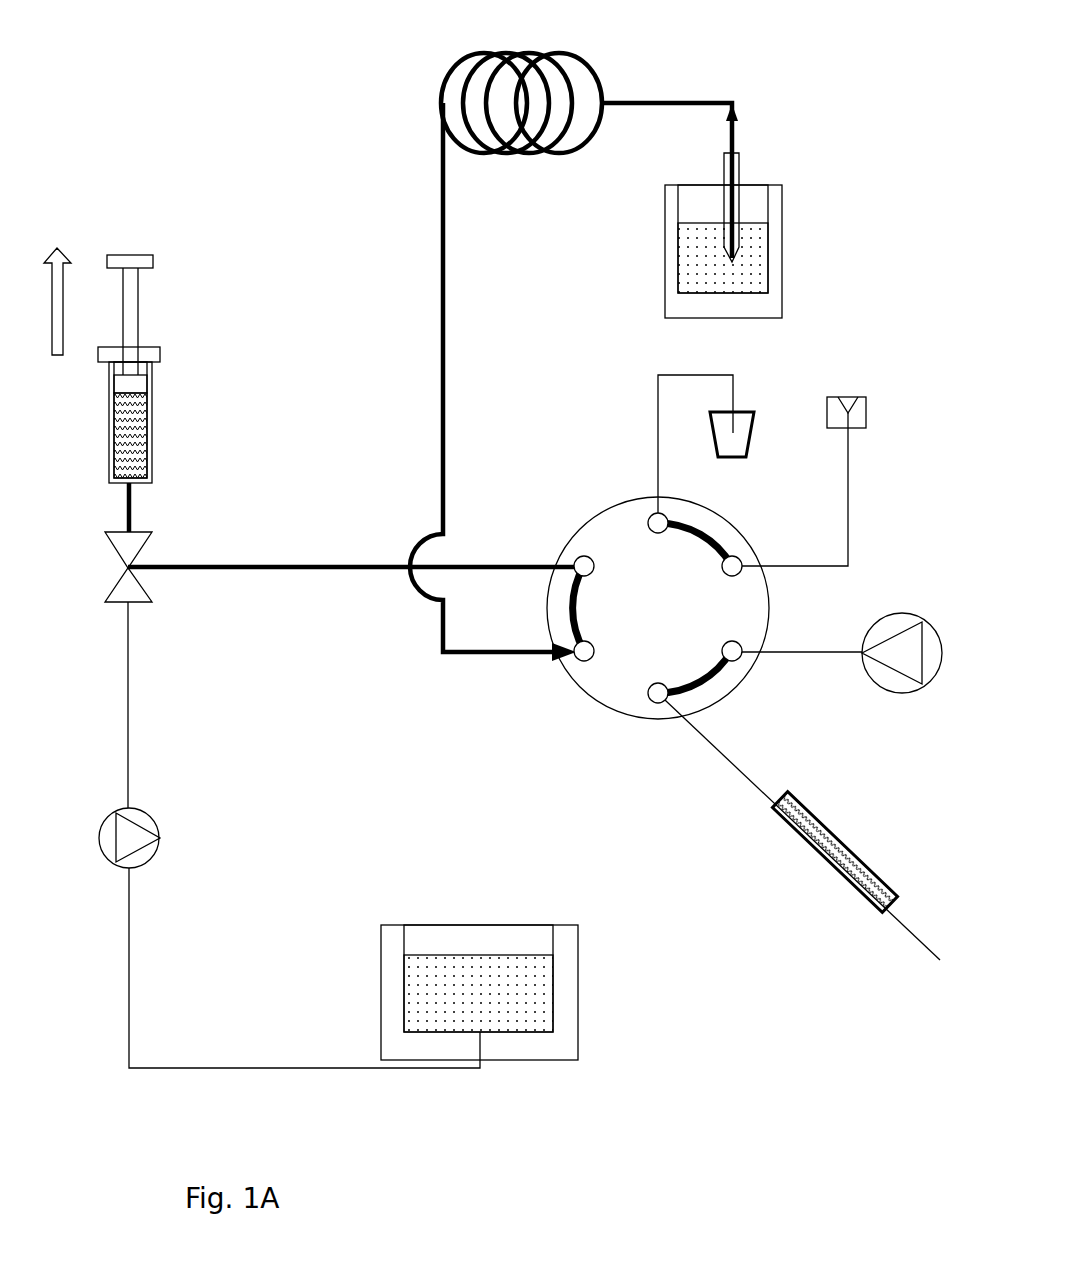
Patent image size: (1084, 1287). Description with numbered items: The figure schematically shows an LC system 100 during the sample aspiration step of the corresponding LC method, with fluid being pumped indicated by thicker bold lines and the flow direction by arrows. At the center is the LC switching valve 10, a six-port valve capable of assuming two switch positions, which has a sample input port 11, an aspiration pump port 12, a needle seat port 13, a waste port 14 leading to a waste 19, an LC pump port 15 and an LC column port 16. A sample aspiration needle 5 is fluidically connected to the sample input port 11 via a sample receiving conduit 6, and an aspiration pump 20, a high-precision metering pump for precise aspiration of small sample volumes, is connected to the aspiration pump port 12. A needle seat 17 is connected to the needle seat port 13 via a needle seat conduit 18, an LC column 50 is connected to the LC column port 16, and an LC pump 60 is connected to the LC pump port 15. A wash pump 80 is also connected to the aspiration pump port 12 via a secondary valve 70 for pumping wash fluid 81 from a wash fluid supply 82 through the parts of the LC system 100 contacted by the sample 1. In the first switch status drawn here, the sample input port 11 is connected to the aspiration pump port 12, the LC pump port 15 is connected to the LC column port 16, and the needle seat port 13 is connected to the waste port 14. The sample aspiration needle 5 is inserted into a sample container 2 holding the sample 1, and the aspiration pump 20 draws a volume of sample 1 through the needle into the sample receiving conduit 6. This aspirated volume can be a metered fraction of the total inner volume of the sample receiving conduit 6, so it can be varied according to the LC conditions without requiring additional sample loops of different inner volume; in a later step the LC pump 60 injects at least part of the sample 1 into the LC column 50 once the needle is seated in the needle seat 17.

The LC system 100 is at (280, 132).
The sample 1 is at (741, 240).
The sample container 2 is at (782, 200).
The sample aspiration needle 5 is at (722, 172).
The sample receiving conduit 6 is at (672, 102).
The LC switching valve 10 is at (616, 714).
The sample input port 11 is at (580, 665).
The aspiration pump port 12 is at (578, 558).
The needle seat port 13 is at (727, 569).
The waste port 14 is at (655, 514).
The LC pump port 15 is at (726, 650).
The LC column port 16 is at (656, 704).
The needle seat 17 is at (868, 415).
The needle seat conduit 18 is at (789, 557).
The waste 19 is at (752, 420).
The aspiration pump 20 is at (152, 406).
The LC column 50 is at (865, 866).
The LC pump 60 is at (902, 610).
The secondary valve 70 is at (148, 536).
The wash pump 80 is at (160, 820).
The wash fluid 81 is at (465, 972).
The wash fluid supply 82 is at (578, 990).